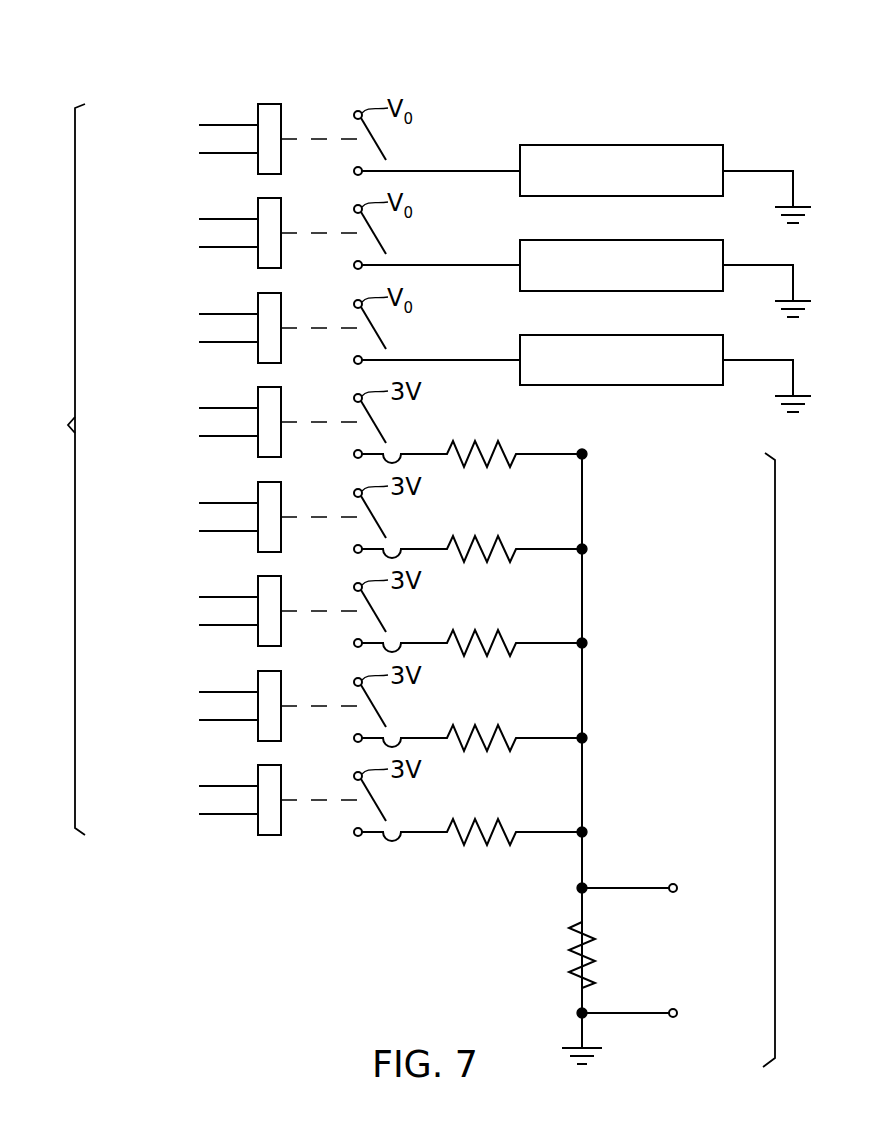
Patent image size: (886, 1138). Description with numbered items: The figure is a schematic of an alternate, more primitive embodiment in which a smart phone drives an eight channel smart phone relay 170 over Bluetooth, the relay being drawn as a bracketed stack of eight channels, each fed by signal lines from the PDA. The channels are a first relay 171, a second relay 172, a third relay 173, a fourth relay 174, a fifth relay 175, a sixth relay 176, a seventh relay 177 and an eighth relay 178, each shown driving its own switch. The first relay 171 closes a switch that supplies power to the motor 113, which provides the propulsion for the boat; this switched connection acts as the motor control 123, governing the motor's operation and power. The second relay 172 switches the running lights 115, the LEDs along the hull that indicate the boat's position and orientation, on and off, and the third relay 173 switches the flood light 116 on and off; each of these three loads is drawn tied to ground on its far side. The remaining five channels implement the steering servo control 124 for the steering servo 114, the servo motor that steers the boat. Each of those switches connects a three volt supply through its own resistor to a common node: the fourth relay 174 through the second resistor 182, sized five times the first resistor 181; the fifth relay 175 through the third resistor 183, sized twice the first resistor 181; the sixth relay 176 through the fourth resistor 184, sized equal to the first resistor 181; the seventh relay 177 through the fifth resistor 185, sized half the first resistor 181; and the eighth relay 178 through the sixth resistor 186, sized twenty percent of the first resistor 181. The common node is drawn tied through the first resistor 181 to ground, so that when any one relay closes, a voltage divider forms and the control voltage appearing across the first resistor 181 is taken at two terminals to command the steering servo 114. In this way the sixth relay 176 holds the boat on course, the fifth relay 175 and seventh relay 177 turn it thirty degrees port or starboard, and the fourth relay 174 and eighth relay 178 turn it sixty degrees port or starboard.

The eight channel smart phone relay 170 is at (137, 469).
The first relay 171 is at (270, 110).
The second relay 172 is at (267, 205).
The third relay 173 is at (267, 298).
The fourth relay 174 is at (265, 395).
The fifth relay 175 is at (265, 490).
The sixth relay 176 is at (265, 585).
The seventh relay 177 is at (268, 680).
The eighth relay 178 is at (263, 835).
The motor 113 is at (700, 150).
The motor control 123 is at (658, 150).
The running lights 115 is at (740, 228).
The flood light 116 is at (694, 382).
The second resistor 182 is at (500, 440).
The third resistor 183 is at (500, 537).
The fourth resistor 184 is at (500, 630).
The fifth resistor 185 is at (500, 725).
The sixth resistor 186 is at (500, 820).
The first resistor 181 is at (592, 965).
The steering servo control 124 is at (775, 847).
The steering servo 114 is at (722, 948).